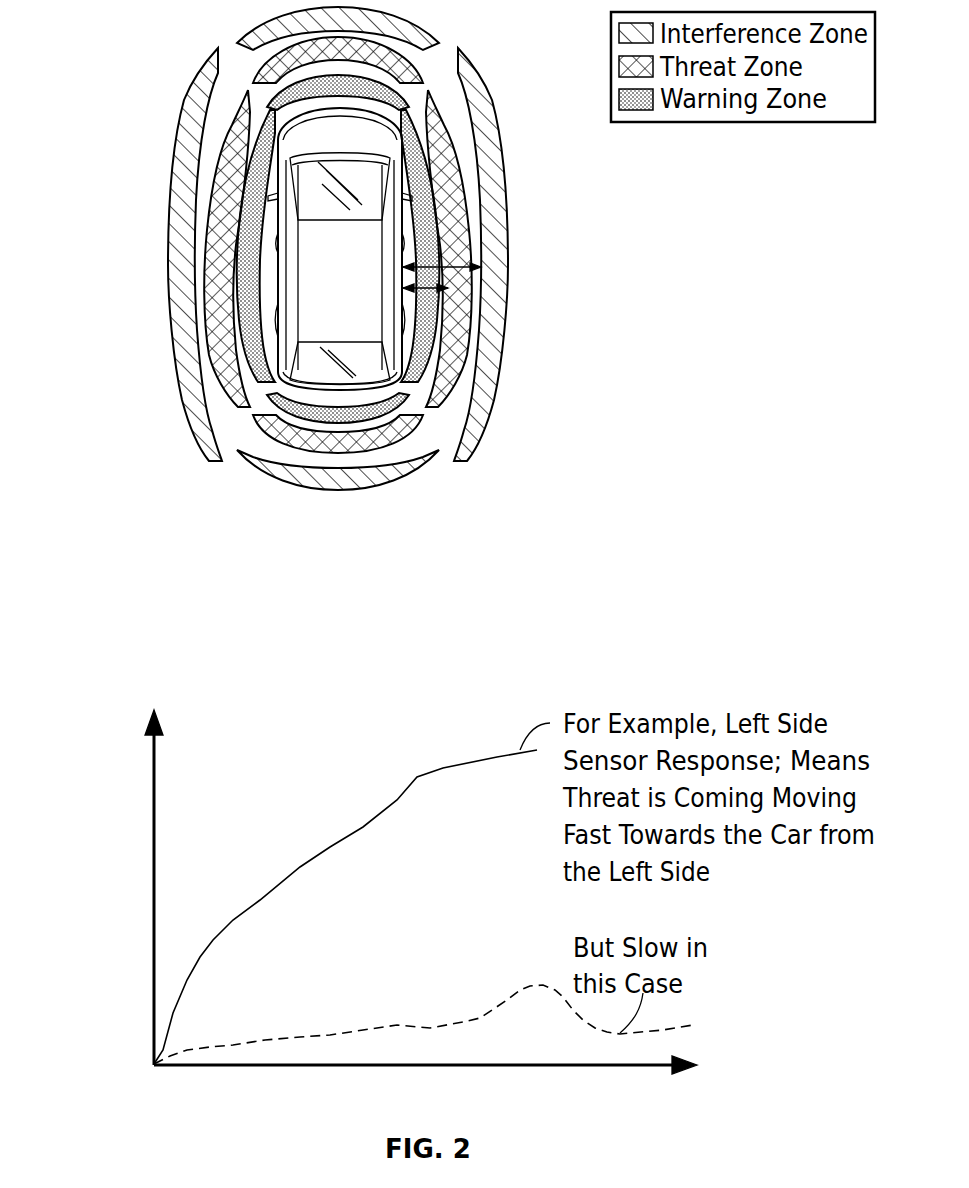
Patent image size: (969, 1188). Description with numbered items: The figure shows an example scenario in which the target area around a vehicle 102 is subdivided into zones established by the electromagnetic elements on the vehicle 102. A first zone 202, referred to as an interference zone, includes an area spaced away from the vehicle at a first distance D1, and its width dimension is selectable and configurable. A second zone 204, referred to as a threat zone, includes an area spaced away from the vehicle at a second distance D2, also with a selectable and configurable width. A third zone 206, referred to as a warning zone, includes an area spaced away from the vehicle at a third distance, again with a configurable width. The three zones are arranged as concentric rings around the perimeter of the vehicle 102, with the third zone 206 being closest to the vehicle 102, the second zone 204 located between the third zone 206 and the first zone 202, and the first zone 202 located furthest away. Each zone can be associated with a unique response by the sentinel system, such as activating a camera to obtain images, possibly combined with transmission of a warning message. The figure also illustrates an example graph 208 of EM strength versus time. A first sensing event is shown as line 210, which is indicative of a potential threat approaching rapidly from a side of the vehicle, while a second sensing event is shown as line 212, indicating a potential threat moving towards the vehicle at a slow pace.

The vehicle 102 is at (318, 291).
The first zone 202 is at (205, 72).
The second zone 204 is at (218, 143).
The third zone 206 is at (242, 257).
The first distance D1 is at (447, 267).
The second distance D2 is at (430, 290).
The graph 208 is at (96, 743).
The line 210 is at (375, 815).
The line 212 is at (480, 1018).